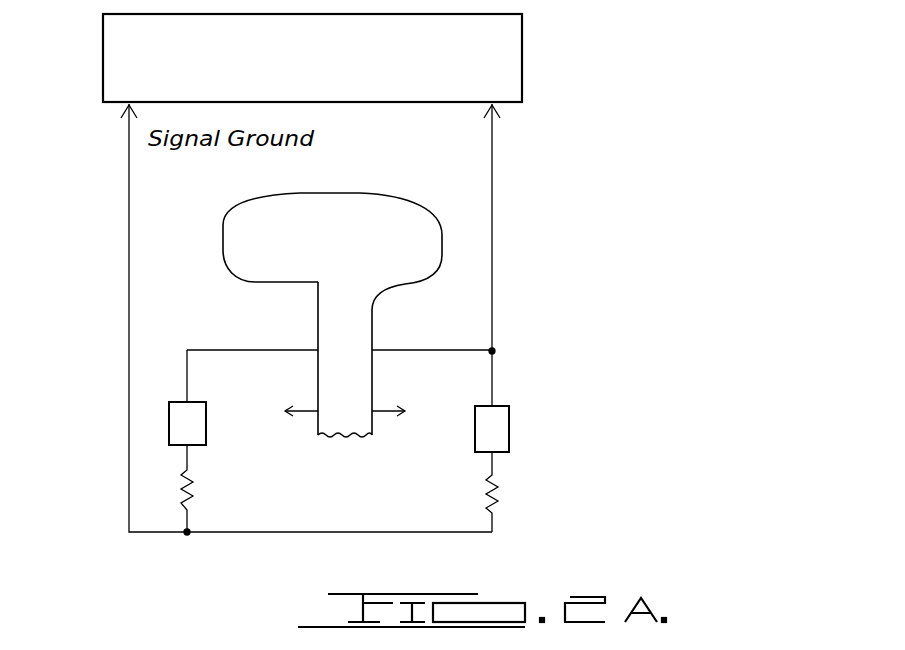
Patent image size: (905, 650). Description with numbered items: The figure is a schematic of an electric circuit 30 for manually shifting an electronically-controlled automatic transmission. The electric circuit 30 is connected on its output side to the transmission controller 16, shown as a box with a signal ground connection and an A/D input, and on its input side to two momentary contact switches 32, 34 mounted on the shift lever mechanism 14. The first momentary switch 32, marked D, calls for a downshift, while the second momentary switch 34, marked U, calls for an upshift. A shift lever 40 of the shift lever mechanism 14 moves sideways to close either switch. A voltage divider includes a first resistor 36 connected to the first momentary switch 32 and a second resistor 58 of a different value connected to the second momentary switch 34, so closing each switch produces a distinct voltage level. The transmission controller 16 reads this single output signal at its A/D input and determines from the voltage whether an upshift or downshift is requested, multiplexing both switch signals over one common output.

The transmission controller 16 is at (118, 60).
The electric circuit 30 is at (570, 104).
The shift lever mechanism 14 is at (411, 203).
The shift lever 40 is at (355, 321).
The first momentary switch 32 is at (193, 432).
The second momentary switch 34 is at (498, 425).
The first resistor 36 is at (192, 495).
The resistor 58 is at (497, 501).